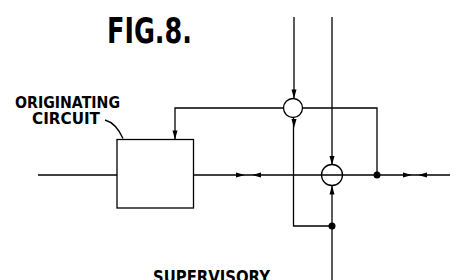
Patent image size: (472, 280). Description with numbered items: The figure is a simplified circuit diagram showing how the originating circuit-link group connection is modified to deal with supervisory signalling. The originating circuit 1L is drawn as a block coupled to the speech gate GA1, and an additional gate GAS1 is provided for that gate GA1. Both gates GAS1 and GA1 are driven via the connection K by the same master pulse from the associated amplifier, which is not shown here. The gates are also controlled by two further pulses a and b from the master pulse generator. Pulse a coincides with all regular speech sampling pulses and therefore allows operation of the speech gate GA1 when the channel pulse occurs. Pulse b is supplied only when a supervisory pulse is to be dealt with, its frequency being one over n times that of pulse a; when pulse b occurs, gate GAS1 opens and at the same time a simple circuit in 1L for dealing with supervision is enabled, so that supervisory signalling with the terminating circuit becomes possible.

The originating circuit 1L is at (155, 174).
The additional gate GAS1 is at (268, 95).
The speech gate GA1 is at (348, 187).
The pulse a is at (339, 88).
The pulse b is at (284, 55).
The connection K is at (341, 253).